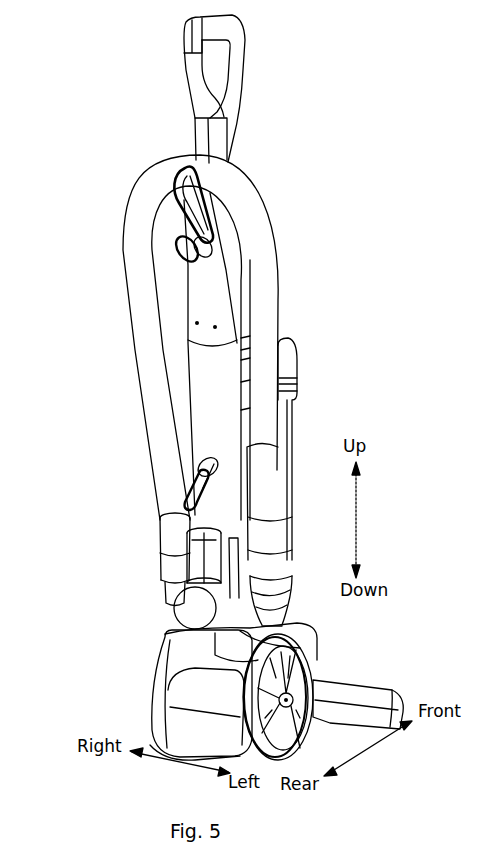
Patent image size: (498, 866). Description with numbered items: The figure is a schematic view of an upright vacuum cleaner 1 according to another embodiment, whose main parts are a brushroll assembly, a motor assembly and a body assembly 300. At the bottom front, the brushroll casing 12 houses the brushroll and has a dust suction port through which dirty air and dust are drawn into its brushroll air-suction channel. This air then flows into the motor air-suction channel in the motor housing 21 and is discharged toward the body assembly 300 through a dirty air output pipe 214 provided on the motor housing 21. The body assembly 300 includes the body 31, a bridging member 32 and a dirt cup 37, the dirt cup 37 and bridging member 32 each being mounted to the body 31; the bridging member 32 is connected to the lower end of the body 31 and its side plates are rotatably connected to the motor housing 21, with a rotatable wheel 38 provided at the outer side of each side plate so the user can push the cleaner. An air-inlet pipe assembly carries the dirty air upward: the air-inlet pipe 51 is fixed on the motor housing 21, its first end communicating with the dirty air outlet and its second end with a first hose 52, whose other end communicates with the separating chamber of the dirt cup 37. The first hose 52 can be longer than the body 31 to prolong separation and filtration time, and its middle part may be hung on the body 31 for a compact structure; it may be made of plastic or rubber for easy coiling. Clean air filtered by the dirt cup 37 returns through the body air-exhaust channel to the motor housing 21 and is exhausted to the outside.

The upright vacuum cleaner 1 is at (287, 131).
The brushroll casing 12 is at (340, 691).
The motor housing 21 is at (178, 690).
The body 31 is at (212, 494).
The bridging member 32 is at (220, 612).
The dirt cup 37 is at (288, 380).
The rotatable wheel 38 is at (302, 672).
The air-inlet pipe 51 is at (272, 577).
The first hose 52 is at (147, 357).
The dirty air output pipe 214 is at (270, 603).
The body assembly 300 is at (114, 460).